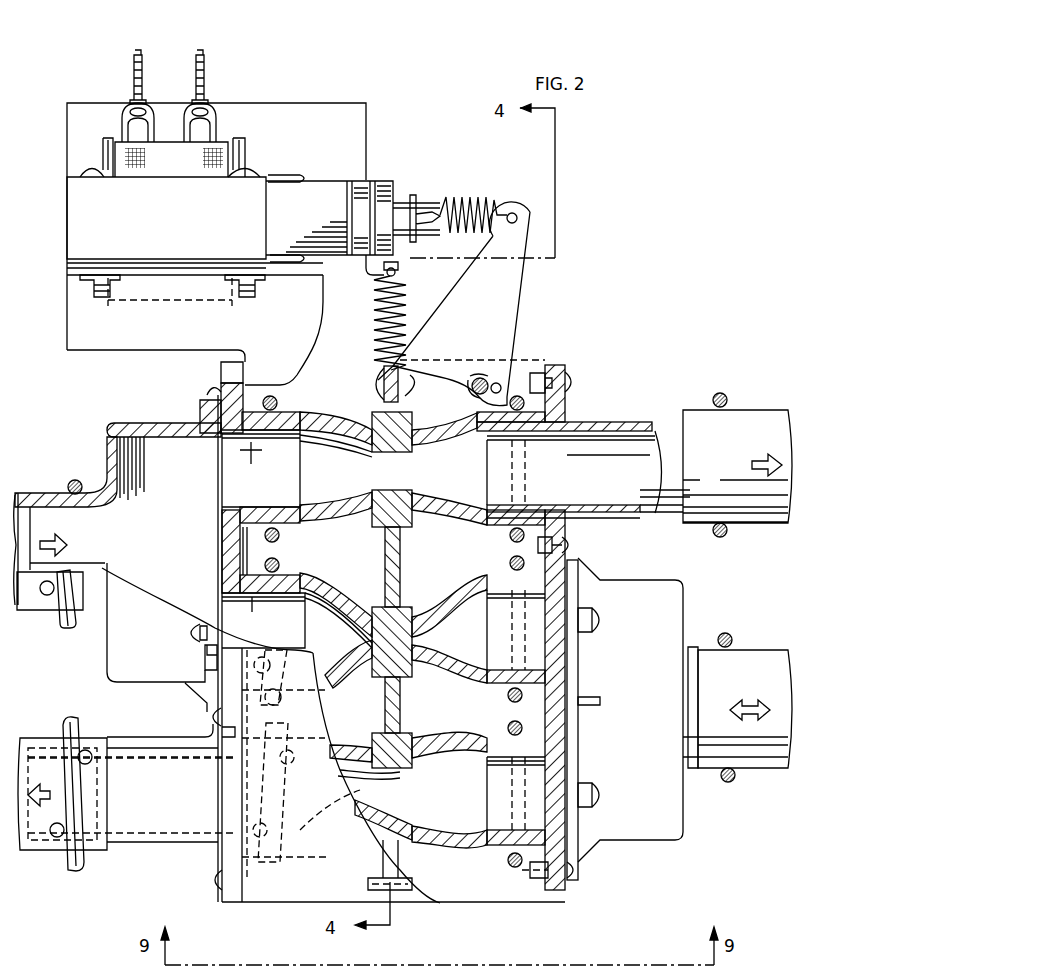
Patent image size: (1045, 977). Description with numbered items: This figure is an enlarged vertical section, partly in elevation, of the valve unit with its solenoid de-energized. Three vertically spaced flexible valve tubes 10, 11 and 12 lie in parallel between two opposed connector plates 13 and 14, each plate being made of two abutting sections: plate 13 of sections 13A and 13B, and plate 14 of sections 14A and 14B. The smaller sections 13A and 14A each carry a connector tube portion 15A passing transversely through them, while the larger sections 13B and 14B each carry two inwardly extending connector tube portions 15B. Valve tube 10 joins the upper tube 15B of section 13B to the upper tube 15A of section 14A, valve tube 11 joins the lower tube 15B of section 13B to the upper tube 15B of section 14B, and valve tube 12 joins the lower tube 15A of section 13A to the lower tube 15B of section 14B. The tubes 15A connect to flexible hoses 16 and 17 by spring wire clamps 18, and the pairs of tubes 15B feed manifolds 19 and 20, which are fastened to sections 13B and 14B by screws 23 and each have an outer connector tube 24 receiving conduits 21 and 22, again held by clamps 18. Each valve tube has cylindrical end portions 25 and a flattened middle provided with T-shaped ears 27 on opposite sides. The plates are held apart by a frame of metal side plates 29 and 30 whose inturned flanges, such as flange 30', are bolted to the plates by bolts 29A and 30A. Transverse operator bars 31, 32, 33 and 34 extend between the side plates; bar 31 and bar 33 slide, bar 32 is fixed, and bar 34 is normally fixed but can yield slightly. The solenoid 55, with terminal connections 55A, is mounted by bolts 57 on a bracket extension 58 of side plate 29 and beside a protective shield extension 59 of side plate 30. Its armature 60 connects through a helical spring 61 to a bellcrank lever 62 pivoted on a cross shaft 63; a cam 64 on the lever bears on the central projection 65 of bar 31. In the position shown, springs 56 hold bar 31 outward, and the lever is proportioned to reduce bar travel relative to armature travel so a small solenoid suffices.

The valve tube 10 is at (441, 508).
The valve tube 11 is at (445, 676).
The valve tube 12 is at (446, 828).
The connector plate 13 is at (229, 373).
The plate section 13A is at (220, 849).
The plate section 13B is at (220, 545).
The connector plate 14 is at (567, 372).
The plate section 14A is at (562, 410).
The plate section 14B is at (578, 888).
The connector tube portion 15A is at (632, 421).
The connector tube portion 15B is at (251, 464).
The flexible conduit 16 is at (40, 850).
The flexible conduit 17 is at (755, 410).
The spring wire clamp 18 is at (75, 480).
The manifold 19 is at (122, 682).
The manifold 20 is at (655, 840).
The conduit 21 is at (20, 492).
The conduit 22 is at (775, 770).
The screw 23 is at (190, 636).
The outer connector tube 24 is at (75, 518).
The cylindrical end portion 25 is at (290, 413).
The ear 27 is at (409, 425).
The side plate 29 is at (303, 896).
The bolt 29A is at (208, 722).
The side plate 30 is at (393, 915).
The inturned angular flange 30' is at (405, 727).
The bolt 30A is at (578, 386).
The operator bar 31 is at (383, 397).
The operator bar 32 is at (384, 552).
The operator bar 33 is at (384, 710).
The operator bar 34 is at (382, 860).
The solenoid 55 is at (229, 141).
The terminal connection 55A is at (196, 68).
The spring 56 is at (372, 331).
The bolt 57 is at (96, 297).
The bracket extension 58 is at (323, 295).
The protective shield extension 59 is at (321, 106).
The armature 60 is at (424, 205).
The helical spring 61 is at (477, 198).
The bellcrank lever 62 is at (510, 298).
The cross shaft 63 is at (476, 377).
The cam 64 is at (388, 372).
The central projection 65 is at (381, 378).